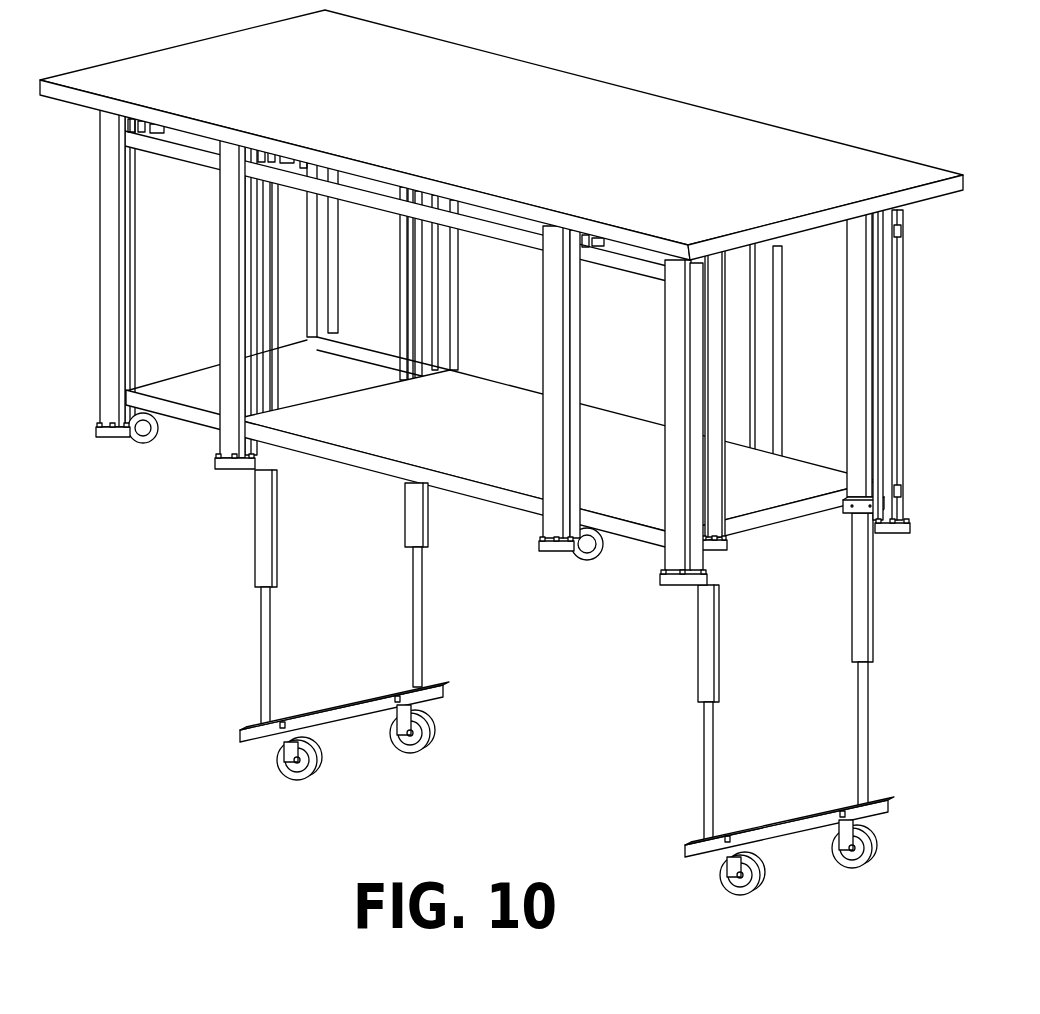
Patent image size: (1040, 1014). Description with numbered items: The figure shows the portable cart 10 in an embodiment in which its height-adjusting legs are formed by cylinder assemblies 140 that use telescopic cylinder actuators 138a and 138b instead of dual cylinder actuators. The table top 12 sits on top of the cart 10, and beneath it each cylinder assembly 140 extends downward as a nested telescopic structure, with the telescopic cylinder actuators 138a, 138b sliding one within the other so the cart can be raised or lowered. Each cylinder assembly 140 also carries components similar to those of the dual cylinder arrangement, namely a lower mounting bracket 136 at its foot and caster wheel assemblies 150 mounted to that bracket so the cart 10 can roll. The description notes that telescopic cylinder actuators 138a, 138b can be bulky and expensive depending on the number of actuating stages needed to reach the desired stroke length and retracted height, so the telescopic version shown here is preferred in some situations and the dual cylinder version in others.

The portable cart 10 is at (529, 464).
The table top 12 is at (574, 115).
The lower mounting bracket 136 is at (802, 832).
The telescopic cylinder actuator 138a is at (264, 652).
The telescopic cylinder actuator 138b is at (264, 549).
The cylinder assembly 140 is at (873, 373).
The caster wheel assembly 150 is at (870, 846).